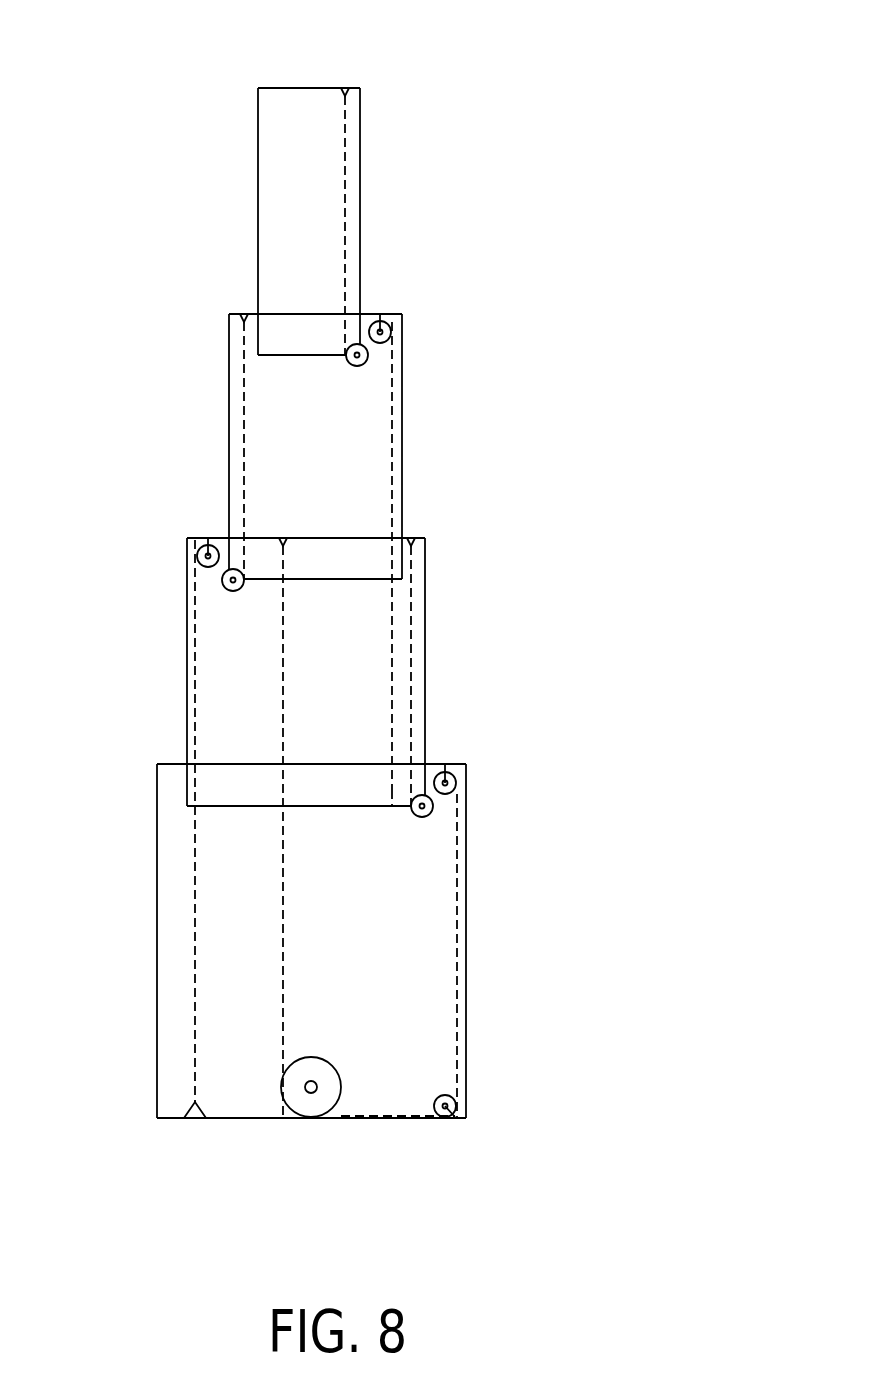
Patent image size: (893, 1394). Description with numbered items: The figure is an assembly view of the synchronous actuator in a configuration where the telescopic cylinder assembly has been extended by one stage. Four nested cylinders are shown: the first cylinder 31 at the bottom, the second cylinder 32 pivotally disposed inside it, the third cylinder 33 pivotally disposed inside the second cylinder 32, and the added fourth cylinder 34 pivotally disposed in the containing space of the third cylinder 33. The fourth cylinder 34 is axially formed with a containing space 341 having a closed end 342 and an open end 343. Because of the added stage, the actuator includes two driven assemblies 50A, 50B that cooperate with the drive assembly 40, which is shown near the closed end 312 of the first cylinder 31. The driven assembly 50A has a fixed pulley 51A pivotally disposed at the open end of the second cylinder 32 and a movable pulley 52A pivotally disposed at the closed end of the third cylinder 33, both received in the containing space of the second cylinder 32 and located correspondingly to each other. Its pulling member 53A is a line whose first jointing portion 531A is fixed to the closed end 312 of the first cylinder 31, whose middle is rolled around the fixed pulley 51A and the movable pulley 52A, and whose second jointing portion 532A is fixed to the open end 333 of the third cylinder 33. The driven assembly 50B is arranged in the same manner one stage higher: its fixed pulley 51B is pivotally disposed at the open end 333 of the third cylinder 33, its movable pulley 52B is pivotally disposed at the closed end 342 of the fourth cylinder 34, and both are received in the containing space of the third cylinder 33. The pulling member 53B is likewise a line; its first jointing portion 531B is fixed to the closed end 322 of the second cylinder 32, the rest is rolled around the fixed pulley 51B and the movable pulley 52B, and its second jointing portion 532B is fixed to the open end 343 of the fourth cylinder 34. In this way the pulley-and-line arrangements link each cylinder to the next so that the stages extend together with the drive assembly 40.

The first cylinder 31 is at (467, 1000).
The closed end 312 is at (417, 1120).
The second cylinder 32 is at (422, 608).
The closed end 322 is at (362, 807).
The third cylinder 33 is at (402, 410).
The open end 333 is at (370, 313).
The fourth cylinder 34 is at (355, 147).
The containing space 341 is at (288, 192).
The closed end 342 is at (277, 356).
The open end 343 is at (273, 87).
The drive assembly 40 is at (275, 1112).
The driven assembly 50A is at (138, 581).
The fixed pulley 51A is at (200, 537).
The movable pulley 52A is at (220, 589).
The pulling member 53A is at (197, 687).
The first jointing portion 531A is at (193, 1119).
The second jointing portion 532A is at (242, 312).
The driven assembly 50B is at (415, 342).
The fixed pulley 51B is at (386, 323).
The movable pulley 52B is at (352, 367).
The pulling member 53B is at (393, 495).
The first jointing portion 531B is at (392, 790).
The second jointing portion 532B is at (347, 87).